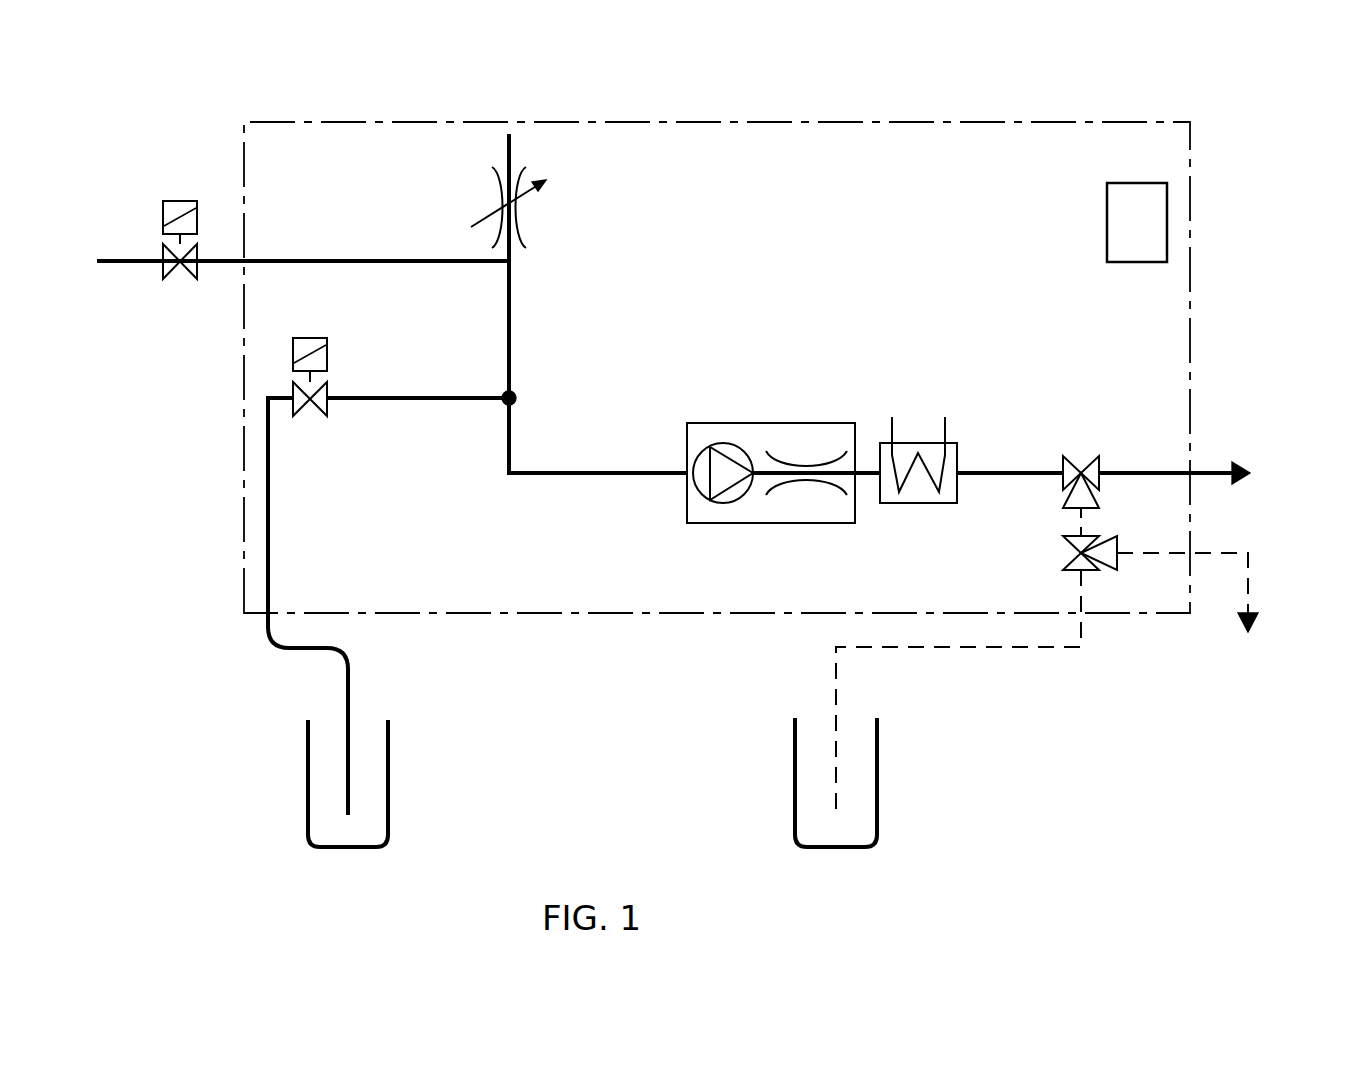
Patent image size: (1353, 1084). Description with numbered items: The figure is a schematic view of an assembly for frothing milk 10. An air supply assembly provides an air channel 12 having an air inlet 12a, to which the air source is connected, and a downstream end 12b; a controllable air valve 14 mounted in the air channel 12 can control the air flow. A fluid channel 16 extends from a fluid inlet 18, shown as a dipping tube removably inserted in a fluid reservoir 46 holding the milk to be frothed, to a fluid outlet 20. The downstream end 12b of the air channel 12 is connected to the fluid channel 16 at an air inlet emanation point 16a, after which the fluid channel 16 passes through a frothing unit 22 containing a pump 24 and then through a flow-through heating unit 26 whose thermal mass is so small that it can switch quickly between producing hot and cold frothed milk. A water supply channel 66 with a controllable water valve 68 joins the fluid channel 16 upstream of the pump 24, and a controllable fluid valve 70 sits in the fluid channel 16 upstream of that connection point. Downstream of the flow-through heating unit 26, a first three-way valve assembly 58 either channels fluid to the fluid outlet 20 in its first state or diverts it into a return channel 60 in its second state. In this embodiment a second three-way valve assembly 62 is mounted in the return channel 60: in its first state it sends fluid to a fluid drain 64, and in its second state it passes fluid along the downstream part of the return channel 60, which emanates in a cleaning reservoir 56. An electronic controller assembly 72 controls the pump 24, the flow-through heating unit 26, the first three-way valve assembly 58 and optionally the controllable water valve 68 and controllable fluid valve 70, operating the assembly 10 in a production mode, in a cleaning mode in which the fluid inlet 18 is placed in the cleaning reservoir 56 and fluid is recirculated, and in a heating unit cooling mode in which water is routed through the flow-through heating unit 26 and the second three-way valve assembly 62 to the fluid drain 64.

The assembly for frothing milk 10 is at (236, 136).
The air channel 12 is at (511, 274).
The air inlet 12a is at (509, 132).
The downstream end of the air channel 12b is at (512, 368).
The controllable air valve 14 is at (520, 232).
The fluid channel 16 is at (272, 523).
The air inlet emanation point 16a is at (515, 399).
The fluid inlet 18 is at (344, 767).
The fluid outlet 20 is at (1245, 473).
The frothing unit 22 is at (809, 423).
The pump 24 is at (728, 445).
The flow-through heating unit 26 is at (917, 504).
The fluid reservoir 46 is at (390, 778).
The cleaning reservoir 56 is at (878, 780).
The first three-way valve assembly 58 is at (1068, 495).
The return channel 60 is at (972, 650).
The second three-way valve assembly 62 is at (1107, 570).
The fluid drain 64 is at (1250, 580).
The water supply channel 66 is at (319, 259).
The controllable water valve 68 is at (182, 200).
The controllable fluid valve 70 is at (312, 336).
The electronic controller assembly 72 is at (1138, 183).